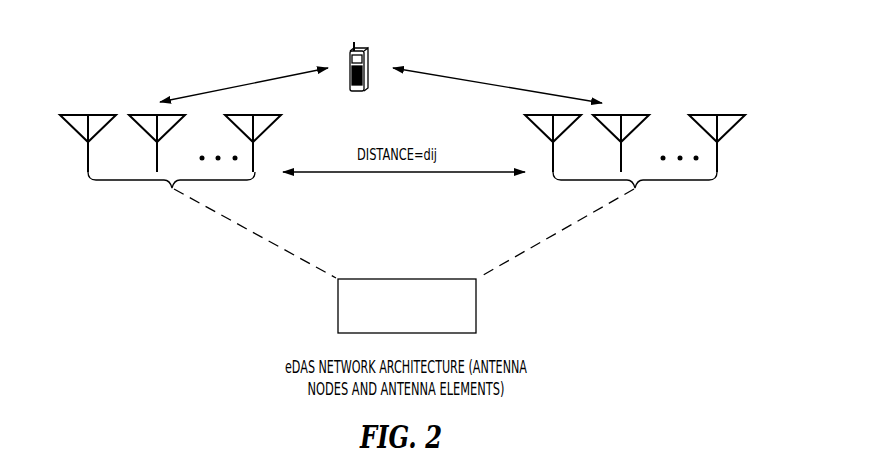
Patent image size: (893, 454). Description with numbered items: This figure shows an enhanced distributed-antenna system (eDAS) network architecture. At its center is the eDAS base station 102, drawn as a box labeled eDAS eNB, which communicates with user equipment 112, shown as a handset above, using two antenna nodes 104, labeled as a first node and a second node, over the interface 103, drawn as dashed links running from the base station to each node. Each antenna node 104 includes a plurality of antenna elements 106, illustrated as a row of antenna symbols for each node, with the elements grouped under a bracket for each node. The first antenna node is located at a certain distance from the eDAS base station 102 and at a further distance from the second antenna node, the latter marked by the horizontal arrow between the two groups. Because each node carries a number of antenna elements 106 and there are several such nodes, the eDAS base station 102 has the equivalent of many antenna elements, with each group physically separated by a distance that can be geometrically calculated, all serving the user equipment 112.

The eDAS base station 102 is at (338, 305).
The X3 interface 103 is at (276, 249).
The antenna node 104 is at (153, 240).
The antenna element 106 is at (402, 128).
The user equipment 112 is at (362, 49).